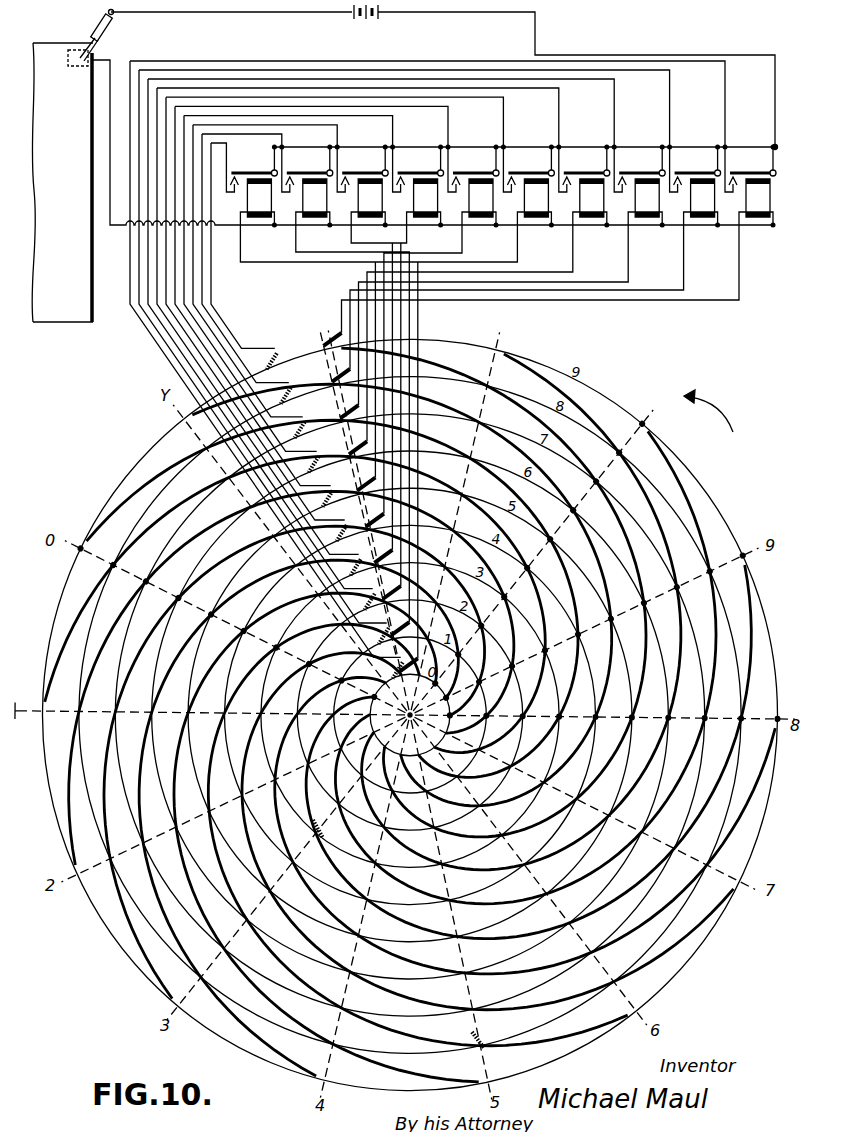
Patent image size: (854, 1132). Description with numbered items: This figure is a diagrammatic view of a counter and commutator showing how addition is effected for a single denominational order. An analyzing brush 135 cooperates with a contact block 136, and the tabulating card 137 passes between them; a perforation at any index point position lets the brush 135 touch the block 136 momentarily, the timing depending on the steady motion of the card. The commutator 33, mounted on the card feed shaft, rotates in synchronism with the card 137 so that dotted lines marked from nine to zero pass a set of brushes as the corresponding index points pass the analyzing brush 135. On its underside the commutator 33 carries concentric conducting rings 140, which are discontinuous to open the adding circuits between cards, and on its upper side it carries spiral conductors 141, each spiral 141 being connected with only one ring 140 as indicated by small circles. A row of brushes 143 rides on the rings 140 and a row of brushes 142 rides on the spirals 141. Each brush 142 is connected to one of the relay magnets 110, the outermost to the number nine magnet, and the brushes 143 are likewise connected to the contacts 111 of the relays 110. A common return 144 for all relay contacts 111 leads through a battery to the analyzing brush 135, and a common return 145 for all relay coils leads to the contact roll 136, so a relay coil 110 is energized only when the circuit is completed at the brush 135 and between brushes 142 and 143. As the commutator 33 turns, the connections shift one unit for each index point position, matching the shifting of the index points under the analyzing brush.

The analyzing brush 135 is at (91, 36).
The contact block 136 is at (97, 56).
The tabulating card 137 is at (62, 201).
The common return 144 is at (705, 56).
The relay contacts 111 is at (233, 170).
The relay magnets 110 is at (251, 190).
The common return 145 is at (481, 227).
The brushes 143 is at (279, 357).
The brushes 142 is at (340, 383).
The concentric conducting rings 140 is at (528, 392).
The spiral conductors 141 is at (592, 541).
The commutator 33 is at (606, 402).